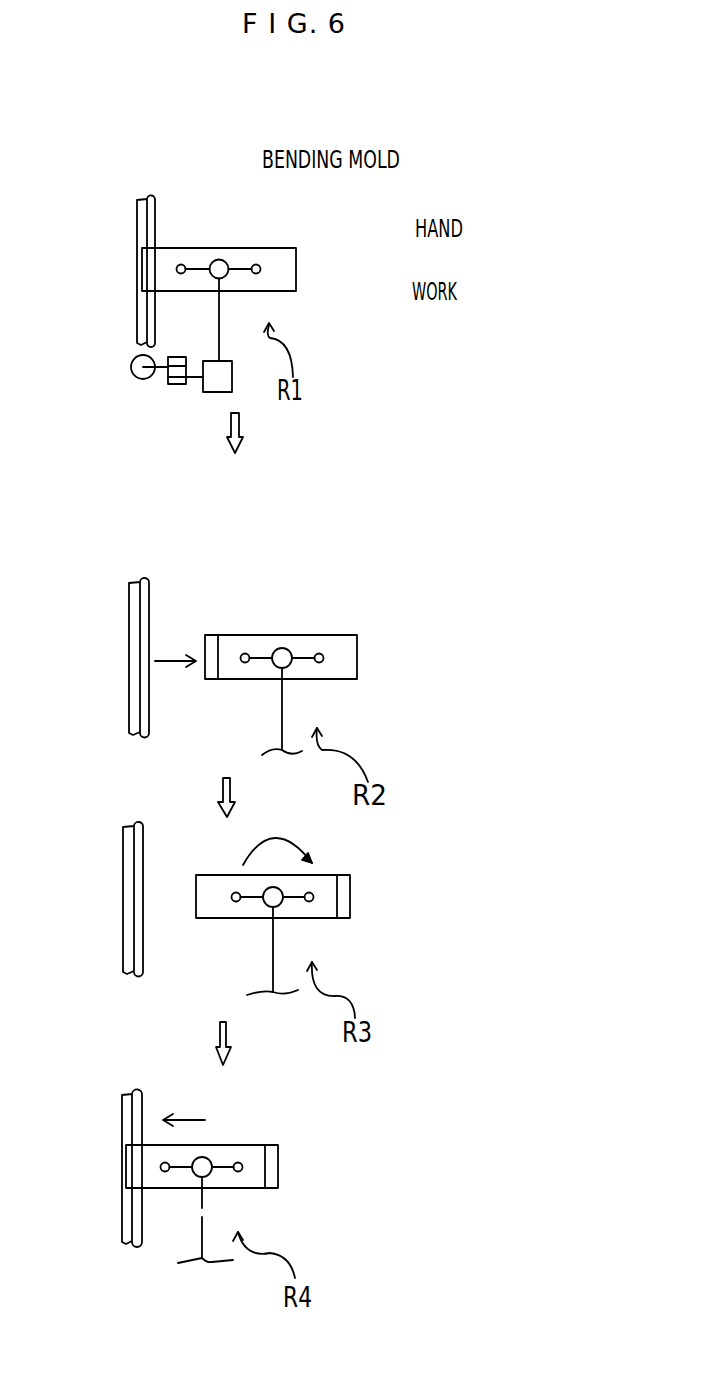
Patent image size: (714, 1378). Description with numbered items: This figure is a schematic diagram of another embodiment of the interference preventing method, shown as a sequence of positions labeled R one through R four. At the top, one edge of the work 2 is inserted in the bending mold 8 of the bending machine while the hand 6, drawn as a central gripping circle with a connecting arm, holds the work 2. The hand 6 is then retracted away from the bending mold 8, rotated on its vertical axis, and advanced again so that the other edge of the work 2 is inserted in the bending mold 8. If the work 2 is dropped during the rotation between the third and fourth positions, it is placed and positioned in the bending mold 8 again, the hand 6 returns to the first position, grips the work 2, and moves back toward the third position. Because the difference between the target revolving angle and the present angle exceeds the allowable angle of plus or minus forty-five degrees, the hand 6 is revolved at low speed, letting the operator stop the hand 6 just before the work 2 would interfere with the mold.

The bending mold 8 is at (151, 218).
The work 2 is at (199, 258).
The hand 6 is at (220, 270).